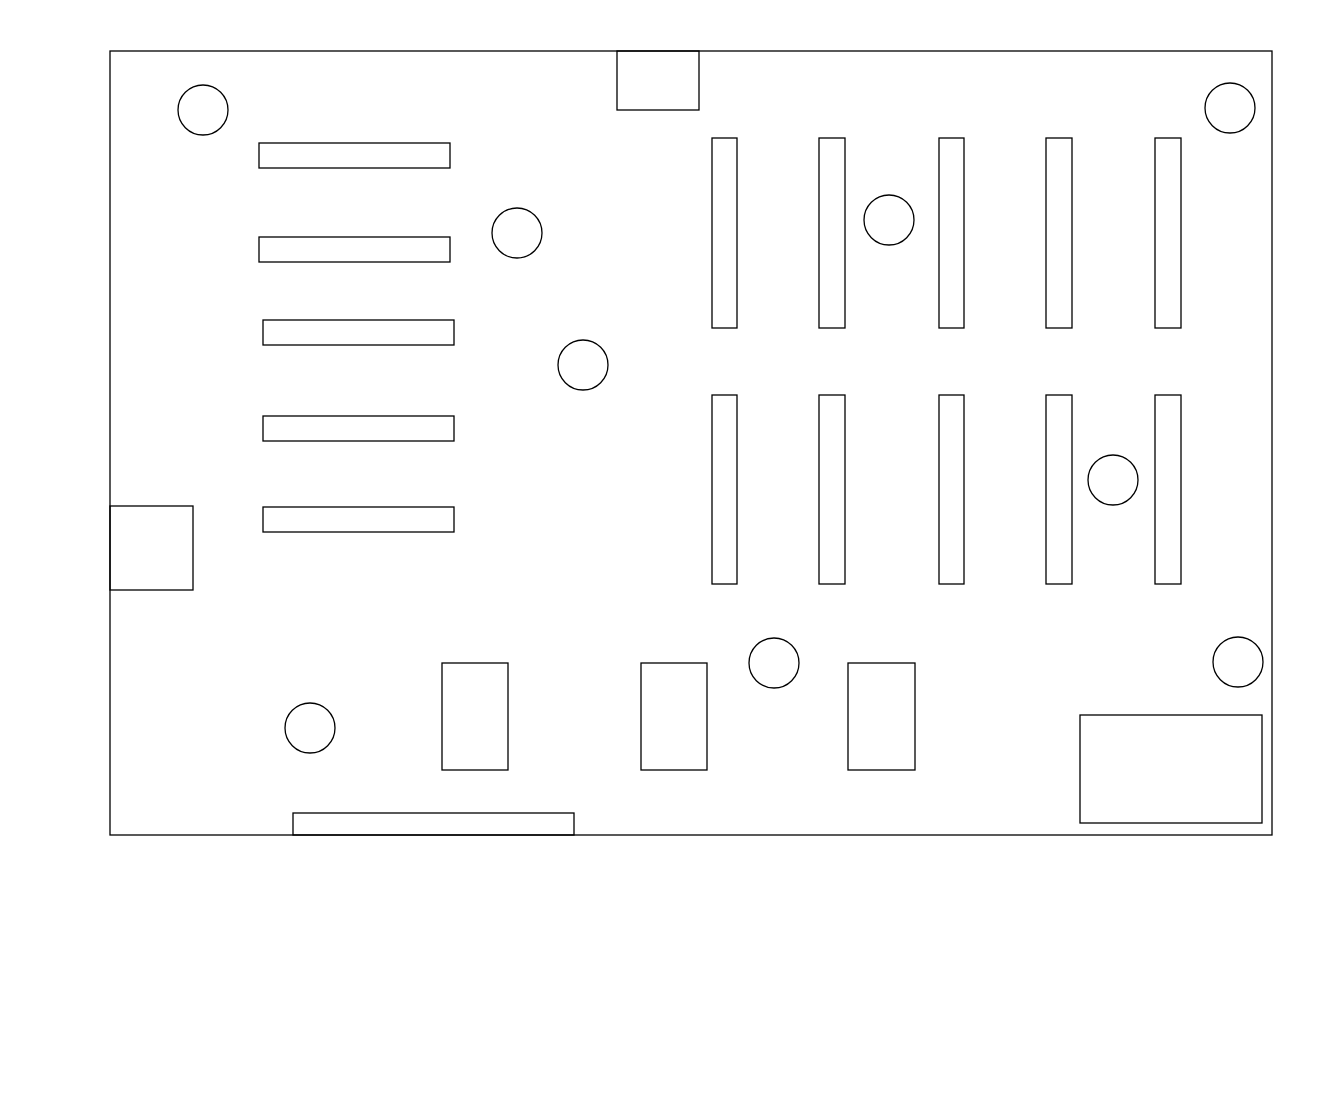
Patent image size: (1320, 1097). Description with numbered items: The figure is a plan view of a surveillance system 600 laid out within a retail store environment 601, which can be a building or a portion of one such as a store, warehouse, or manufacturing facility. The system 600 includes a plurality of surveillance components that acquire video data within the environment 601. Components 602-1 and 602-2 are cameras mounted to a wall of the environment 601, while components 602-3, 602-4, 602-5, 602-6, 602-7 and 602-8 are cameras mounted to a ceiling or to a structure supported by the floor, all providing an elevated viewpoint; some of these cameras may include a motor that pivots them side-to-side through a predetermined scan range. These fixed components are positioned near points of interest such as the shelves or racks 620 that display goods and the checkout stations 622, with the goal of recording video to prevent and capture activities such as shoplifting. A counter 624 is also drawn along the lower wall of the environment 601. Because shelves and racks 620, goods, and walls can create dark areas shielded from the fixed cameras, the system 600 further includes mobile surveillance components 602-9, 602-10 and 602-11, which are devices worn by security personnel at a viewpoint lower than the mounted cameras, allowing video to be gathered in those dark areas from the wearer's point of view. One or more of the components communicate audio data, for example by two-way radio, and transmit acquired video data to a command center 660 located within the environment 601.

The system 600 is at (282, 40).
The retail store environment 601 is at (557, 50).
The surveillance component 602-1 is at (183, 558).
The surveillance component 602-2 is at (690, 91).
The surveillance component 602-3 is at (206, 86).
The surveillance component 602-4 is at (1222, 84).
The surveillance component 602-5 is at (579, 341).
The surveillance component 602-6 is at (310, 703).
The surveillance component 602-7 is at (772, 639).
The surveillance component 602-8 is at (1232, 638).
The mobile surveillance component 602-9 is at (907, 198).
The mobile surveillance component 602-10 is at (1130, 456).
The mobile surveillance component 602-11 is at (511, 210).
The shelves or racks 620 is at (360, 143).
The checkout stations 622 is at (497, 730).
The counter 624 is at (300, 812).
The command center 660 is at (1242, 794).